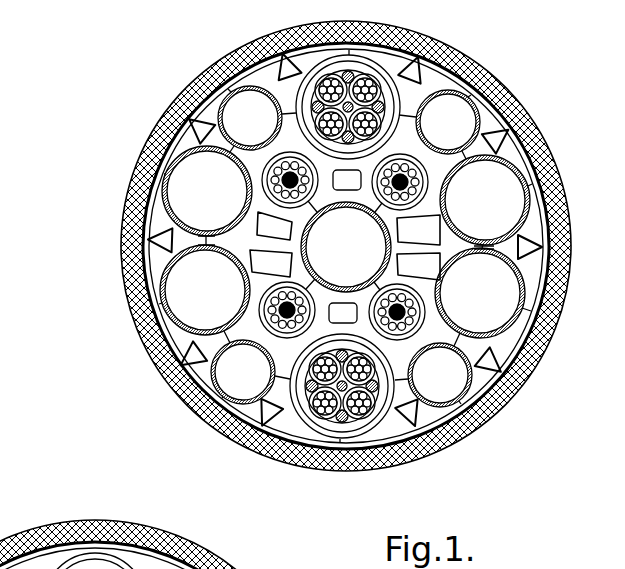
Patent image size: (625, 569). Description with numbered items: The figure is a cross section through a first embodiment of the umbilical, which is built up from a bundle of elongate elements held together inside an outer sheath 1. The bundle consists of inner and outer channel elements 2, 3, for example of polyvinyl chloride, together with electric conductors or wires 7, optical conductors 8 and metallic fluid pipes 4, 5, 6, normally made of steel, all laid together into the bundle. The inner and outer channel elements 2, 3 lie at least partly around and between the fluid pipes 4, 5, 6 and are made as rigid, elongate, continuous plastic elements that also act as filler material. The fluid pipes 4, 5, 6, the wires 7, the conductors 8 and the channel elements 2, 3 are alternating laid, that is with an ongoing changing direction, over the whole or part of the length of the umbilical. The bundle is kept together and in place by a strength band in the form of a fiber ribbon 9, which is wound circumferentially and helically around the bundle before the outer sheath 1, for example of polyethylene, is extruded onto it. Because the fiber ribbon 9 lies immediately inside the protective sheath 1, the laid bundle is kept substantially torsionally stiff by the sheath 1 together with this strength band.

The outer sheath 1 is at (543, 147).
The inner channel element 2 is at (247, 330).
The outer channel element 3 is at (153, 274).
The metallic fluid pipe 4 is at (220, 110).
The metallic fluid pipe 5 is at (300, 238).
The metallic fluid pipe 6 is at (500, 360).
The electric conductor 7 is at (380, 82).
The optical conductor 8 is at (418, 174).
The fiber ribbon 9 is at (565, 307).